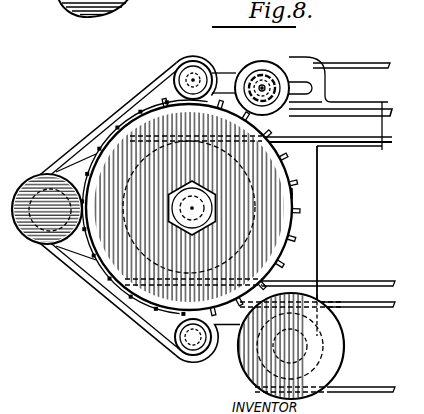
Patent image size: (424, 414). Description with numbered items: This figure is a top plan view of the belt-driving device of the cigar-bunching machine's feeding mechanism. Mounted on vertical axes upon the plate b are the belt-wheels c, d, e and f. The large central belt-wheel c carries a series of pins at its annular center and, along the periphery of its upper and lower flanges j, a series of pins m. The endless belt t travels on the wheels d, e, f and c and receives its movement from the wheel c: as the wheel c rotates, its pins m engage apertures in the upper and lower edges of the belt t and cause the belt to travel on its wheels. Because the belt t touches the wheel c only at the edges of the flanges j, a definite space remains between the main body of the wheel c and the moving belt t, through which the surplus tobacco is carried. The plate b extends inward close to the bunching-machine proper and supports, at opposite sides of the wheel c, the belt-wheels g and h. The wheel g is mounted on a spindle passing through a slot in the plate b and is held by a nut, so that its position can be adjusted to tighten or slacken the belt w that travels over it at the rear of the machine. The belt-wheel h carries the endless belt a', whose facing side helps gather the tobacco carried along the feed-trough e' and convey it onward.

The belt-wheel c is at (189, 207).
The pins m is at (292, 159).
The flanges j is at (291, 192).
The belt-wheel d is at (14, 235).
The belt-wheel e is at (205, 69).
The belt-wheel f is at (193, 337).
The belt-wheel g is at (272, 62).
The belt-wheel h is at (291, 347).
The endless belt t is at (98, 283).
The belt w is at (351, 57).
The plate b is at (340, 103).
The feed-trough e' is at (328, 222).
The endless belt a' is at (362, 382).